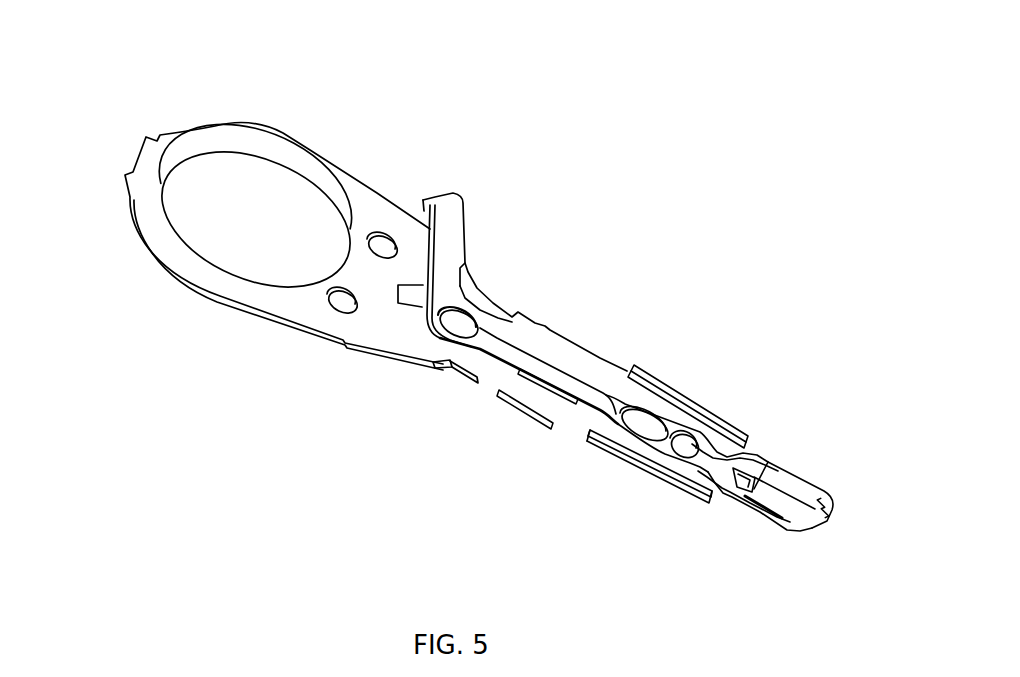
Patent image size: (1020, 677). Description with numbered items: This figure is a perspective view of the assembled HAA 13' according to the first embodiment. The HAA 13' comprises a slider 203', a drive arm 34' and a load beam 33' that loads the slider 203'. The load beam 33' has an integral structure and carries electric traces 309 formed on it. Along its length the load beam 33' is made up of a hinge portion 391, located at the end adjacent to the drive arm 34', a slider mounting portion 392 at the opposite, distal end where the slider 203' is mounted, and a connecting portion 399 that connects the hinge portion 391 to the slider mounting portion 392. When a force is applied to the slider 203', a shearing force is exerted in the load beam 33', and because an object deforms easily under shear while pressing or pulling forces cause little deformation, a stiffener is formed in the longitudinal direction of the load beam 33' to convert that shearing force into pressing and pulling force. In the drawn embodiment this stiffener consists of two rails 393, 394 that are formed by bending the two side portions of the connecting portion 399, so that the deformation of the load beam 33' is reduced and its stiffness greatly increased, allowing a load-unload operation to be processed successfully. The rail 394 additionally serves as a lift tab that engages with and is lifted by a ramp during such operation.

The HAA 13' is at (301, 201).
The load beam 33' is at (583, 332).
The drive arm 34' is at (242, 246).
The hinge portion 391 is at (513, 383).
The rail 393 is at (656, 463).
The rail 394 is at (708, 406).
The connecting portion 399 is at (658, 483).
The electric traces 309 is at (757, 450).
The slider mounting portion 392 is at (762, 537).
The slider 203' is at (820, 476).